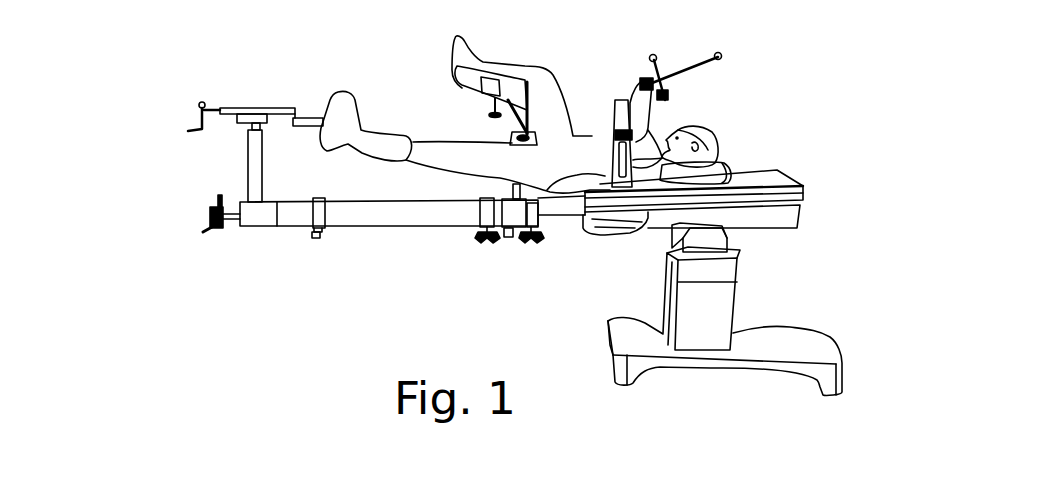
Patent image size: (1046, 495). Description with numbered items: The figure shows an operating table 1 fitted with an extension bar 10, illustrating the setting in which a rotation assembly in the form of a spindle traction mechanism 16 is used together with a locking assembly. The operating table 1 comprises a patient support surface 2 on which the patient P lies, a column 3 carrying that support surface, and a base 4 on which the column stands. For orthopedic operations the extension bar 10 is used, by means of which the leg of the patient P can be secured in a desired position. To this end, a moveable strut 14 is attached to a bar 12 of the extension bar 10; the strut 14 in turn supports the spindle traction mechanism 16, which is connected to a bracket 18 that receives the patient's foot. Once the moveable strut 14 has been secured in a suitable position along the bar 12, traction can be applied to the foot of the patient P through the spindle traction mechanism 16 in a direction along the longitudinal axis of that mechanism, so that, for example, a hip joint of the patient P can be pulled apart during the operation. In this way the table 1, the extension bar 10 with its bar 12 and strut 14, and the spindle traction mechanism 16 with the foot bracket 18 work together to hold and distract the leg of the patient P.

The operating table 1 is at (786, 64).
The patient support surface 2 is at (790, 177).
The column 3 is at (722, 272).
The base 4 is at (837, 354).
The extension bar 10 is at (411, 231).
The bar 12 is at (247, 222).
The moveable strut 14 is at (252, 182).
The spindle traction mechanism 16 is at (250, 92).
The bracket 18 is at (342, 100).
The patient P is at (610, 134).